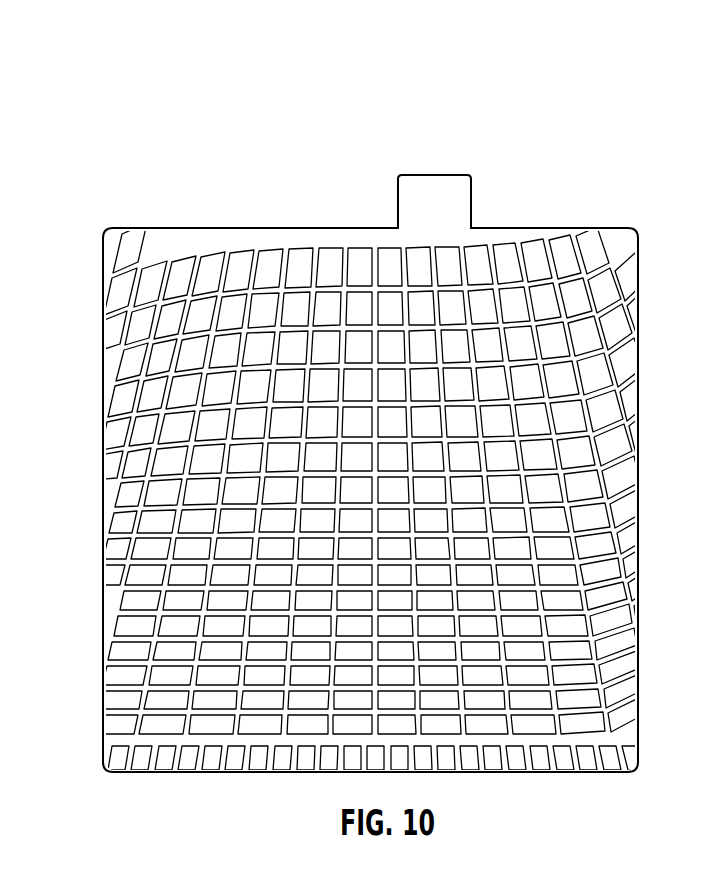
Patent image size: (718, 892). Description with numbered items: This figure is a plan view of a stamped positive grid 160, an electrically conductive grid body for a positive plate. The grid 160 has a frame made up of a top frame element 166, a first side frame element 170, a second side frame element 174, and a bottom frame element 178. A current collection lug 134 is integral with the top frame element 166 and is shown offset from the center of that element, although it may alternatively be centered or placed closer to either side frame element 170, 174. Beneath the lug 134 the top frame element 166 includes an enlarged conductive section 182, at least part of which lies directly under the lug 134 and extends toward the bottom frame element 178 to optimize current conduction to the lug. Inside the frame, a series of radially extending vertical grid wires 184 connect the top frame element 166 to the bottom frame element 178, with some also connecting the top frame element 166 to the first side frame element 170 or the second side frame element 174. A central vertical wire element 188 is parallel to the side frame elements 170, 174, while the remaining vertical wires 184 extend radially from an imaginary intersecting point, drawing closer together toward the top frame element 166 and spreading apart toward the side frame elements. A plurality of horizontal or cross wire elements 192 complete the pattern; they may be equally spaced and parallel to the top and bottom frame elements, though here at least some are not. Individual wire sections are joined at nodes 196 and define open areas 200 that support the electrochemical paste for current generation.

The positive grid 160 is at (283, 124).
The current collection lug 134 is at (471, 190).
The top frame element 166 is at (593, 223).
The first side frame element 170 is at (102, 308).
The second side frame element 174 is at (640, 348).
The bottom frame element 178 is at (570, 772).
The enlarged conductive section 182 is at (390, 231).
The radially extending vertical grid wire 184 is at (440, 412).
The vertical wire element 188 is at (355, 675).
The horizontal wire element 192 is at (533, 653).
The node 196 is at (290, 320).
The open area 200 is at (237, 243).